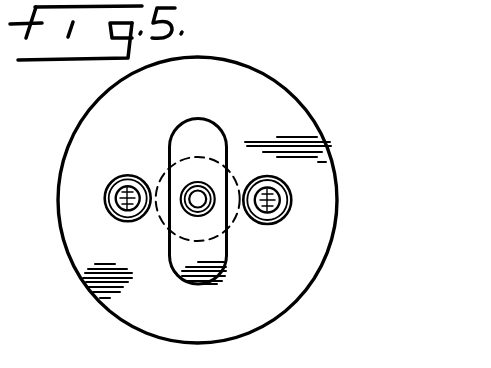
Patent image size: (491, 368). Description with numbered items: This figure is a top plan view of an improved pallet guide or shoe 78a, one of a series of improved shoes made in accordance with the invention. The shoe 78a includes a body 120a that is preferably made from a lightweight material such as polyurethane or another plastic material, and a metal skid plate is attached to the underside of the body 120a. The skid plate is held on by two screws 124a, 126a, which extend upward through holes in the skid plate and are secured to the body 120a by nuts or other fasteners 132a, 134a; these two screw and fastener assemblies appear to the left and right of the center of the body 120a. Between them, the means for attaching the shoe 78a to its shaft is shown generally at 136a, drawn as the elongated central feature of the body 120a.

The shoe 78a is at (326, 119).
The body 120a is at (331, 152).
The means for attaching the shoe to the shaft 136a is at (210, 96).
The screw 124a is at (148, 149).
The nut or other fastener 132a is at (110, 212).
The screw 126a is at (292, 197).
The nut or other fastener 134a is at (292, 222).